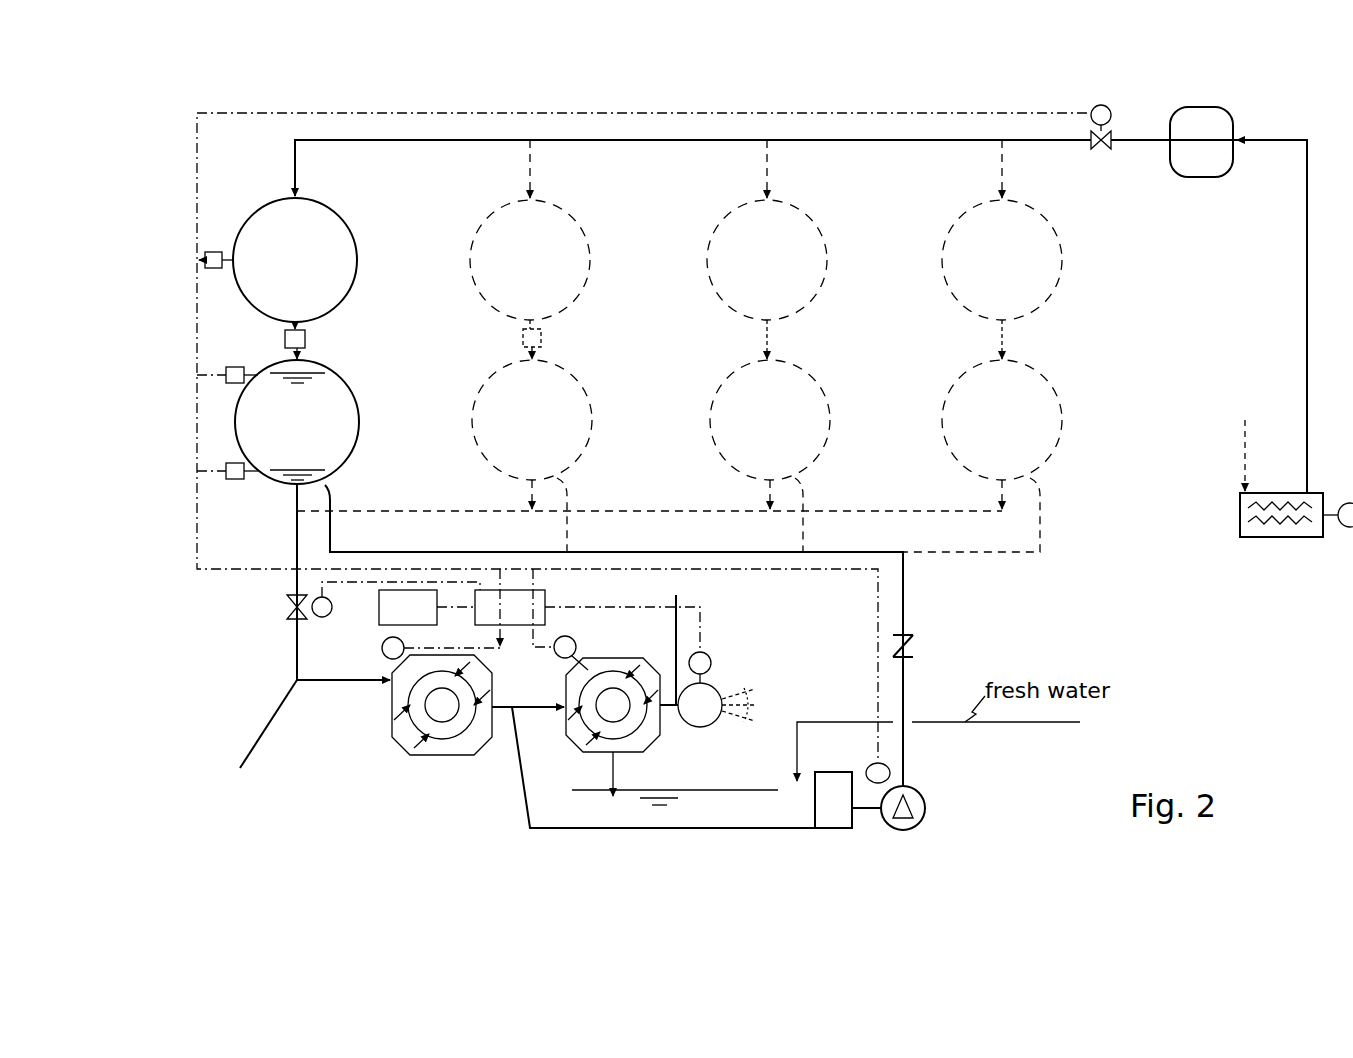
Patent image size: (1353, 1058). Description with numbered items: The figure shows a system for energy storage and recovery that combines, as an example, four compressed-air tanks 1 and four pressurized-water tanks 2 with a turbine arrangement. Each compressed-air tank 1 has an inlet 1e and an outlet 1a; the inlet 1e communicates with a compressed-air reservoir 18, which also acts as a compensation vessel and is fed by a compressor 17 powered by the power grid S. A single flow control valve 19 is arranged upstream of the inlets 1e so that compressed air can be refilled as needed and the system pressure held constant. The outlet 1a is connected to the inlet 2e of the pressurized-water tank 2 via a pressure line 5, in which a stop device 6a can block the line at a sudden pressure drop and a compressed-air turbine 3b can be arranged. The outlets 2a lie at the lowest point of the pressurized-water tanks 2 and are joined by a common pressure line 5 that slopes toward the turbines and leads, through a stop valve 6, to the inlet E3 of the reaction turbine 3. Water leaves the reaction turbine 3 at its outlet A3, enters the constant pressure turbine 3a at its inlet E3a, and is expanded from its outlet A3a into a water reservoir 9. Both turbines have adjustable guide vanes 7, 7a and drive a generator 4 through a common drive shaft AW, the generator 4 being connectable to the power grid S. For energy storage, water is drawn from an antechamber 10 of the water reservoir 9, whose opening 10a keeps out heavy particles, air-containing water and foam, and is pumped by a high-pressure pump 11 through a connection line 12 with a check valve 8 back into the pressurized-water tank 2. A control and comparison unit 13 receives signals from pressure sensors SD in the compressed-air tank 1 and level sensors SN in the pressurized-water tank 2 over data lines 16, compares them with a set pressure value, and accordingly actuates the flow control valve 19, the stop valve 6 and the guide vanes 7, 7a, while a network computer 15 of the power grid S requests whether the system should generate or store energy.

The compressed-air tank 1 is at (681, 249).
The outlet 1a is at (762, 323).
The inlet 1e is at (764, 196).
The pressurized-water tank 2 is at (671, 390).
The outlet 2a is at (997, 485).
The inlet 2e is at (997, 356).
The reaction turbine 3 is at (442, 737).
The constant pressure turbine 3a is at (655, 736).
The compressed-air turbine 3b is at (285, 340).
The generator 4 is at (724, 664).
The pressure line 5 is at (305, 338).
The stop valve 6 is at (359, 634).
The stop device 6a is at (522, 330).
The guide vanes 7 is at (322, 670).
The guide vanes 7a is at (555, 671).
The check valve 8 is at (920, 621).
The water reservoir 9 is at (729, 869).
The antechamber 10 is at (801, 840).
The opening 10a is at (800, 869).
The high-pressure pump 11 is at (895, 836).
The connection line 12 is at (905, 571).
The control and comparison unit 13 is at (487, 625).
The network computer 15 is at (410, 624).
The data line 16 is at (203, 576).
The compressor 17 is at (1267, 517).
The compressed-air reservoir 18 is at (1235, 107).
The flow control valve 19 is at (1126, 93).
The pressure sensor SD is at (212, 268).
The level sensor SN is at (225, 382).
The inlet of reaction turbine E3 is at (390, 690).
The outlet of reaction turbine A3 is at (492, 714).
The inlet of constant pressure turbine E3a is at (562, 712).
The outlet of constant pressure turbine A3a is at (663, 712).
The drive shaft AW is at (523, 876).
The power grid S is at (760, 682).